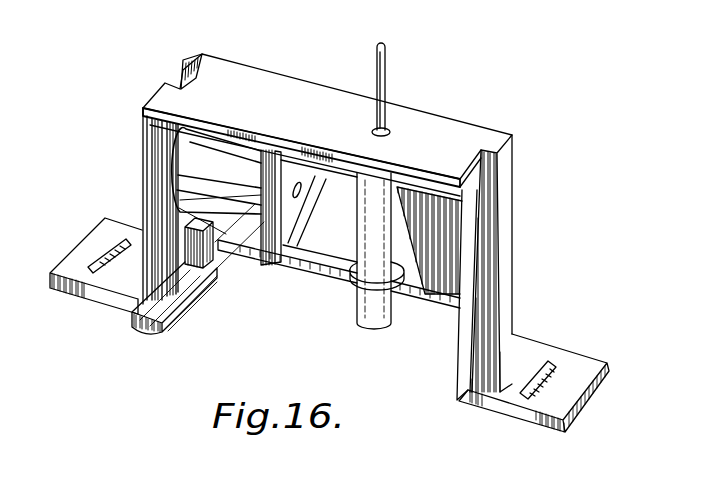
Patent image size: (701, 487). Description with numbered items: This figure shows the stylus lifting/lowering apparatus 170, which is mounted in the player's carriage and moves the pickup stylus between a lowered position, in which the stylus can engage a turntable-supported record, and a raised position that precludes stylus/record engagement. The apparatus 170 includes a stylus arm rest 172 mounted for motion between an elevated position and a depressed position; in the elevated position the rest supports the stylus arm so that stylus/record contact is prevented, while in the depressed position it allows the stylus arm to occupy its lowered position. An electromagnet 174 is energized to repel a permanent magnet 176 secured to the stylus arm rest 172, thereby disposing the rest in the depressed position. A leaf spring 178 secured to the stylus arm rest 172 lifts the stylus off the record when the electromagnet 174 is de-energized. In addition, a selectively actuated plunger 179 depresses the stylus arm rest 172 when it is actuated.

The stylus lifting/lowering apparatus 170 is at (492, 109).
The stylus arm rest 172 is at (180, 305).
The electromagnet 174 is at (186, 172).
The permanent magnet 176 is at (214, 258).
The leaf spring 178 is at (313, 276).
The plunger 179 is at (385, 77).